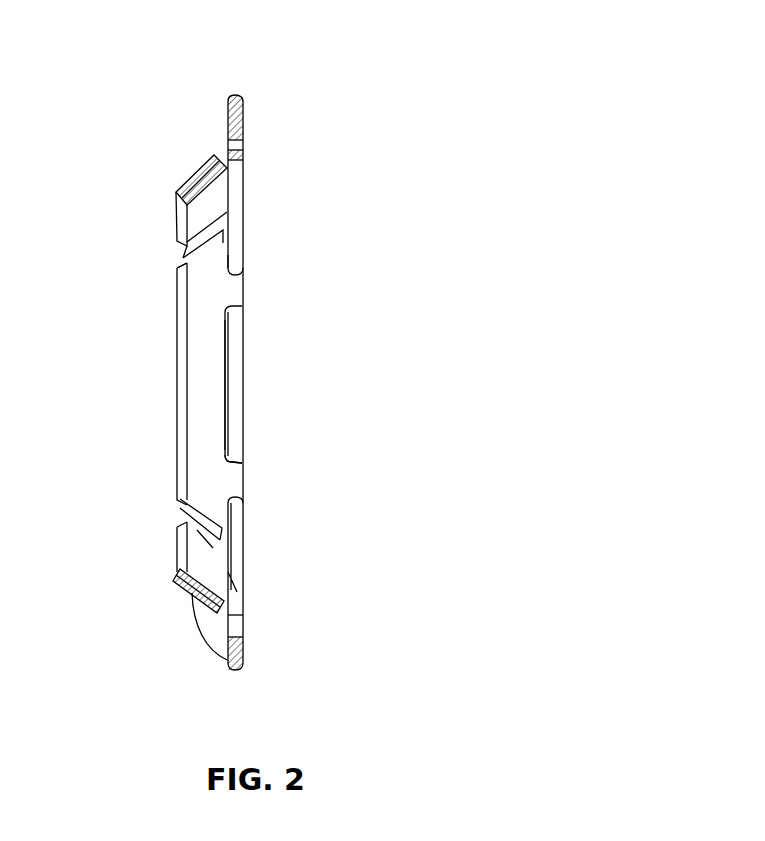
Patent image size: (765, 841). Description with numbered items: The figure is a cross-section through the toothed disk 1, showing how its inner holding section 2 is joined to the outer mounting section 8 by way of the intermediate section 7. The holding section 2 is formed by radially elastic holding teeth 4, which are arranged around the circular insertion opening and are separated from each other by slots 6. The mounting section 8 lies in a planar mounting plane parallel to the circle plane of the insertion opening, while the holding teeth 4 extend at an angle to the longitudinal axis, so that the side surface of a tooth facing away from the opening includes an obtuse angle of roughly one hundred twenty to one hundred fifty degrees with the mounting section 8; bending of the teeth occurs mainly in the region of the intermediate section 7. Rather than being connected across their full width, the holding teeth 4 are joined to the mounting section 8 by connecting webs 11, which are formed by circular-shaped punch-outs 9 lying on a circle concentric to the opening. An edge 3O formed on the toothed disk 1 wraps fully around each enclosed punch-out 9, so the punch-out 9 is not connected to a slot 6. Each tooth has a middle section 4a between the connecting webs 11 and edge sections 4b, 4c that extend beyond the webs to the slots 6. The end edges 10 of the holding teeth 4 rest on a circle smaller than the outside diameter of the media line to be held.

The toothed disk 1 is at (317, 75).
The inner holding section 2 is at (170, 302).
The edge 3O is at (237, 362).
The holding teeth 4 is at (207, 155).
The middle section 4a is at (208, 397).
The edge section 4b is at (203, 502).
The edge section 4c is at (181, 284).
The slots 6 is at (186, 247).
The intermediate section 7 is at (226, 160).
The mounting section 8 is at (244, 108).
The punch-outs 9 is at (237, 437).
The end edges 10 is at (178, 437).
The connecting webs 11 is at (240, 268).